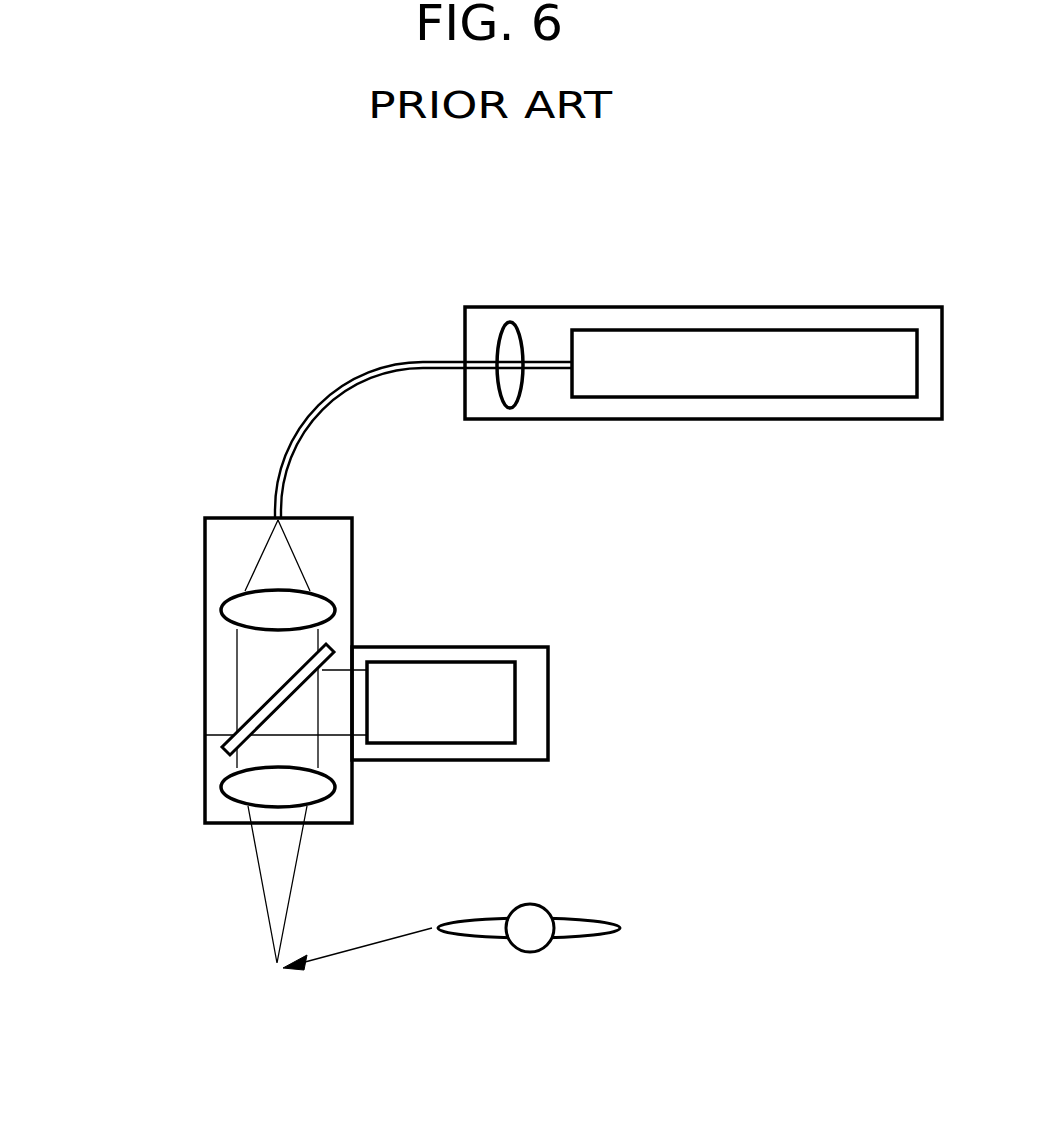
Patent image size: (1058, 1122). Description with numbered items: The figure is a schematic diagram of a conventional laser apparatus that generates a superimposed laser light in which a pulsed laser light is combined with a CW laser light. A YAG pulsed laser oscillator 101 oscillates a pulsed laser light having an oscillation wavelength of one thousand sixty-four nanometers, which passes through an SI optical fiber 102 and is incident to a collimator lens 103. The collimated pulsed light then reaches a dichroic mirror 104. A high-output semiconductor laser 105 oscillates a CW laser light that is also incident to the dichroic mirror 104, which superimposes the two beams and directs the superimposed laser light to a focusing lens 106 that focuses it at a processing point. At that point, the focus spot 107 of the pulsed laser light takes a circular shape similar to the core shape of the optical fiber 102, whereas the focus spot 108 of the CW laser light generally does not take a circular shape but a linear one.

The YAG pulsed laser oscillator 101 is at (762, 307).
The SI optical fiber 102 is at (348, 378).
The collimator lens 103 is at (225, 612).
The dichroic mirror 104 is at (212, 733).
The high-output semiconductor laser 105 is at (457, 662).
The focusing lens 106 is at (225, 790).
The focus spot of the pulsed laser light 107 is at (530, 952).
The focus spot of the CW laser light 108 is at (588, 938).